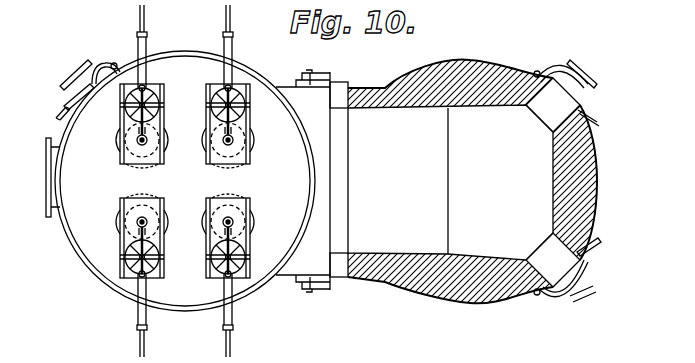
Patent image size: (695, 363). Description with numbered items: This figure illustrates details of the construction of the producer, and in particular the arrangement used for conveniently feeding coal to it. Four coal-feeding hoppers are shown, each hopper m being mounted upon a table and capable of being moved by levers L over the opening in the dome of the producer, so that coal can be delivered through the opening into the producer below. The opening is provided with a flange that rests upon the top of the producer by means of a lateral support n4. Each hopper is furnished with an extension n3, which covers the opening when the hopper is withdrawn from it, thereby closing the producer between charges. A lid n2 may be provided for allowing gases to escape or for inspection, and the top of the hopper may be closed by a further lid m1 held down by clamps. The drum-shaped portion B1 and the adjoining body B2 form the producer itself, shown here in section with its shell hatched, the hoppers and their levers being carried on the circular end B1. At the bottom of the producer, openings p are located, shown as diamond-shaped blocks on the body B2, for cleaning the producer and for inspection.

The levers L is at (139, 15).
The hopper m is at (160, 99).
The lid m1 is at (160, 252).
The lid n2 is at (150, 138).
The extension n3 is at (136, 164).
The lateral support n4 is at (150, 221).
The drum disc B1 is at (188, 181).
The body casing B2 is at (465, 182).
The openings p is at (553, 182).